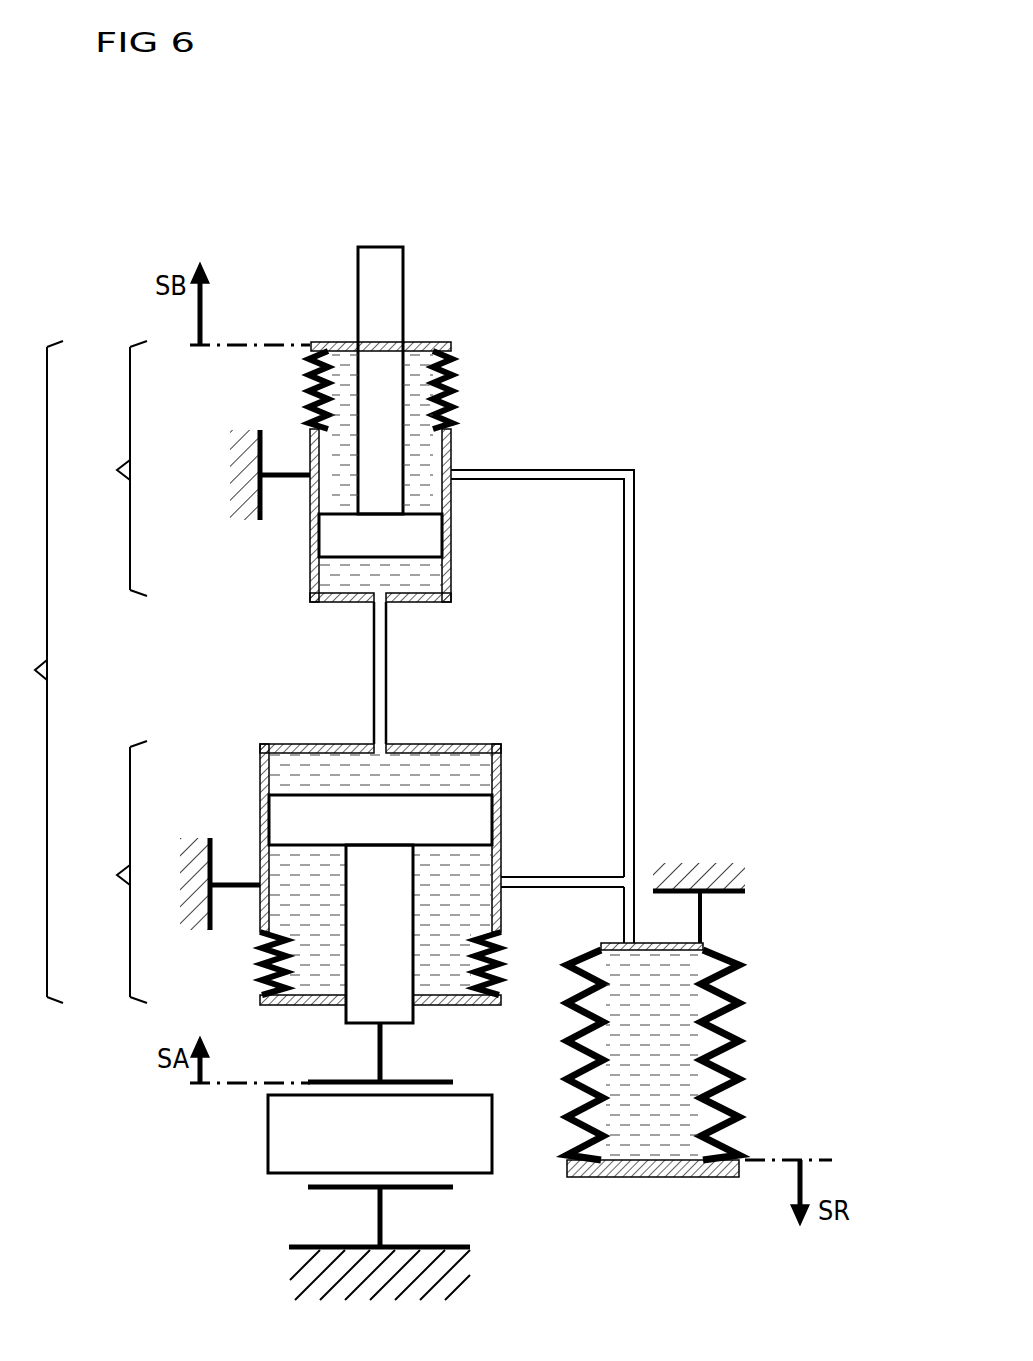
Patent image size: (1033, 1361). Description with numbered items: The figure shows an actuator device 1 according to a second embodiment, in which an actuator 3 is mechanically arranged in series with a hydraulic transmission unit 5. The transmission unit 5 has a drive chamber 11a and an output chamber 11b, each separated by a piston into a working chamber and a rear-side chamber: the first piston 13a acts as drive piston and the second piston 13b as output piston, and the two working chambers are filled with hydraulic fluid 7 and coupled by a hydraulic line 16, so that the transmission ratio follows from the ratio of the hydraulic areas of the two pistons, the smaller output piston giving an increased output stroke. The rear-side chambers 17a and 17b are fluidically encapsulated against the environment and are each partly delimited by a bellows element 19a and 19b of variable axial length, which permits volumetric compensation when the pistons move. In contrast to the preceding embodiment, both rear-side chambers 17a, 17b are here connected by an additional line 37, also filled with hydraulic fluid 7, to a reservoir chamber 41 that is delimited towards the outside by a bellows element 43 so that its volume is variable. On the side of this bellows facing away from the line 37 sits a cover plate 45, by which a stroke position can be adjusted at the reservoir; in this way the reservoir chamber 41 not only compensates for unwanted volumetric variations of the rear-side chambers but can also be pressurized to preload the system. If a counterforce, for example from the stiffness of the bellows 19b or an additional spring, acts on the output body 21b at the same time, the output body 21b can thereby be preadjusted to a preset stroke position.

The actuator device 1 is at (656, 318).
The actuator 3 is at (288, 1137).
The hydraulic transmission unit 5 is at (36, 672).
The hydraulic fluid 7 is at (692, 1001).
The drive chamber 11a is at (106, 872).
The output chamber 11b is at (106, 468).
The first piston 13a is at (476, 815).
The second piston 13b is at (428, 533).
The hydraulic line 16 is at (384, 673).
The rear-side chamber 17a is at (472, 866).
The rear-side chamber 17b is at (423, 449).
The bellows element 19a is at (266, 963).
The bellows element 19b is at (318, 378).
The output body 21b is at (395, 284).
The additional line 37 is at (630, 648).
The reservoir chamber 41 is at (840, 952).
The bellows element 43 is at (716, 1104).
The cover plate 45 is at (655, 1177).